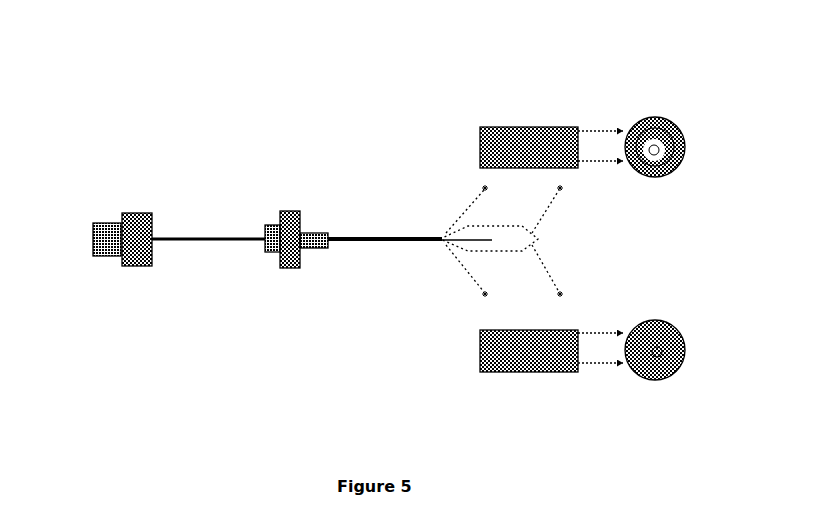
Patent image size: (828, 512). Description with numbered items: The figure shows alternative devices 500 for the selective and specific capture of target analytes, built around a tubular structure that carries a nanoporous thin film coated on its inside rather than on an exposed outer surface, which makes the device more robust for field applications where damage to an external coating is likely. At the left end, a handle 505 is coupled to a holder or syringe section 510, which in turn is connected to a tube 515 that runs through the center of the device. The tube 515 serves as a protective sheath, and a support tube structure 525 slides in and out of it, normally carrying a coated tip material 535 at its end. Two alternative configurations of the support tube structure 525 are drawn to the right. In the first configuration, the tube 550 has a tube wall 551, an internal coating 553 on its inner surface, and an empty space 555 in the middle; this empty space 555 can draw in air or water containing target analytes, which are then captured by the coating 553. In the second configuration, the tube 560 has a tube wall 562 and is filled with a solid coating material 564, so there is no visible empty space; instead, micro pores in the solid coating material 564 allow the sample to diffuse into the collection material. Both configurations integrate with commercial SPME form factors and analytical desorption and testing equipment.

The alternative devices 500 is at (266, 79).
The handle 505 is at (121, 215).
The holder or syringe section 510 is at (290, 213).
The tube 515 is at (381, 237).
The support tube structure 525 is at (473, 240).
The coated tip material 535 is at (502, 244).
The tube 550 is at (517, 126).
The tube wall 551 is at (647, 122).
The internal coating 553 is at (665, 136).
The empty space 555 is at (657, 150).
The tube 560 is at (516, 376).
The tube wall 562 is at (643, 379).
The solid coating material 564 is at (659, 355).